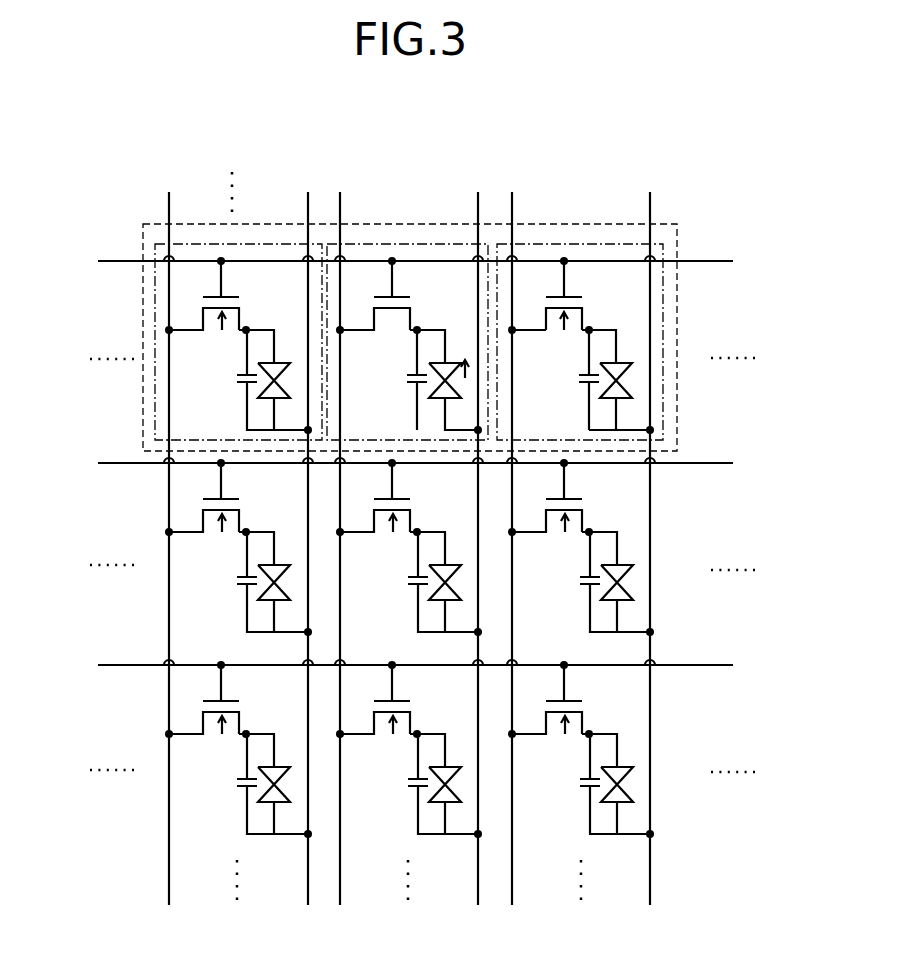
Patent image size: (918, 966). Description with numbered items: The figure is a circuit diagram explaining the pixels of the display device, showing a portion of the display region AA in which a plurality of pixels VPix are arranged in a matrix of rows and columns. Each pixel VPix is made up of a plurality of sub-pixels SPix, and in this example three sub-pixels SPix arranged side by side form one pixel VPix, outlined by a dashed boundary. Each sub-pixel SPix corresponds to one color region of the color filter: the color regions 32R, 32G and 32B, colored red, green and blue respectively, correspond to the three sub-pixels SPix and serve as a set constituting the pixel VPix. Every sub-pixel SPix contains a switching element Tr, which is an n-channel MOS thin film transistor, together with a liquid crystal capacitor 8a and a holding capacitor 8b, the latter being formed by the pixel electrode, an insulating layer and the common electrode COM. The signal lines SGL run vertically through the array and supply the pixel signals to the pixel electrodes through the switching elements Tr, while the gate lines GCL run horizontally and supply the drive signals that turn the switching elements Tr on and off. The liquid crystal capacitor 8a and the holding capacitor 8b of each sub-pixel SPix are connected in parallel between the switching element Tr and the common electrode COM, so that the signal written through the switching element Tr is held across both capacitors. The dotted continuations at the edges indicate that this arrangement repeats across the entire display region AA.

The signal line SGL is at (168, 212).
The gate line GCL is at (140, 261).
The common electrode COM is at (308, 878).
The pixel VPix is at (677, 237).
The sub-pixel SPix is at (272, 244).
The color region 32R is at (199, 407).
The color region 32G is at (448, 284).
The color region 32B is at (608, 284).
The display region AA is at (652, 169).
The switching element Tr is at (554, 336).
The liquid crystal capacitor 8a is at (597, 392).
The holding capacitor 8b is at (415, 387).